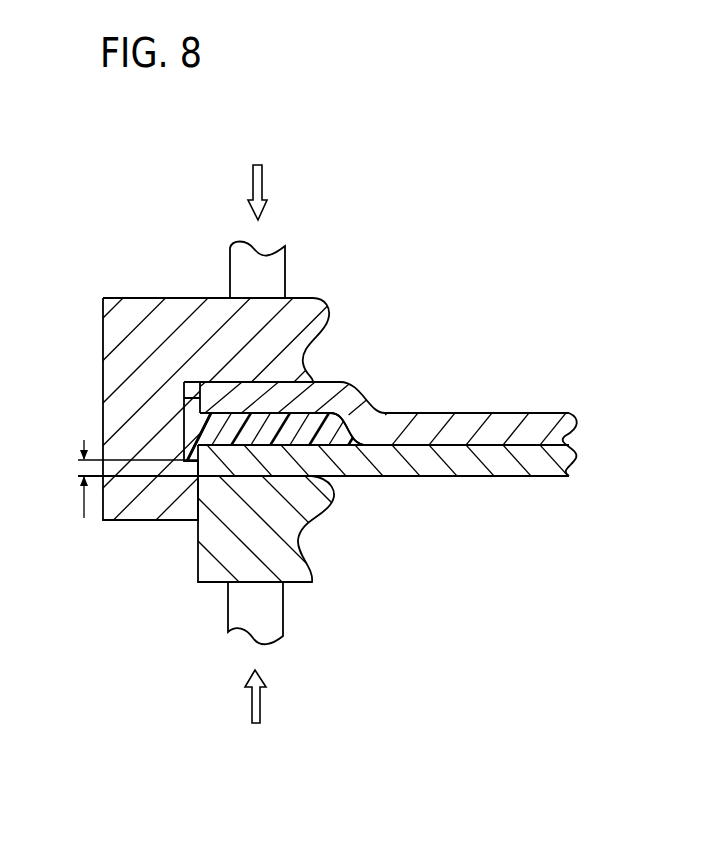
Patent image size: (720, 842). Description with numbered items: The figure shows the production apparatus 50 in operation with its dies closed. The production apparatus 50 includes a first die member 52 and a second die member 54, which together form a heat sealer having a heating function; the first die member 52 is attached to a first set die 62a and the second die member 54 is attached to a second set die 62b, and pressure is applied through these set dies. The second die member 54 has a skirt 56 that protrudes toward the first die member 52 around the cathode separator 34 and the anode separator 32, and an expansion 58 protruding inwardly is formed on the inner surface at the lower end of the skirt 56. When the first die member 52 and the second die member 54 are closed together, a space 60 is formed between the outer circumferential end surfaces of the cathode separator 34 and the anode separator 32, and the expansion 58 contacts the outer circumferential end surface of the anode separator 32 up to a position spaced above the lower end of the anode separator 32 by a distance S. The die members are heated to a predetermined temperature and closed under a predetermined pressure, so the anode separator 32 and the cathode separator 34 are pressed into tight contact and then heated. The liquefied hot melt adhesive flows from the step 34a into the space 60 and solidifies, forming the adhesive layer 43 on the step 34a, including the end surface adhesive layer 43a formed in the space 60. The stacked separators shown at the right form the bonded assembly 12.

The laminate (workpiece) 12 is at (311, 441).
The anode separator 32 is at (467, 463).
The cathode separator 34 is at (480, 427).
The step 34a is at (340, 390).
The adhesive layer 43 is at (313, 433).
The end surface adhesive layer 43a is at (193, 425).
The production apparatus 50 is at (473, 234).
The first die member 52 is at (184, 588).
The second die member 54 is at (160, 296).
The skirt 56 is at (113, 338).
The expansion 58 is at (190, 506).
The space 60 is at (212, 384).
The first set die 62a is at (268, 613).
The second set die 62b is at (272, 277).
The distance S is at (131, 479).